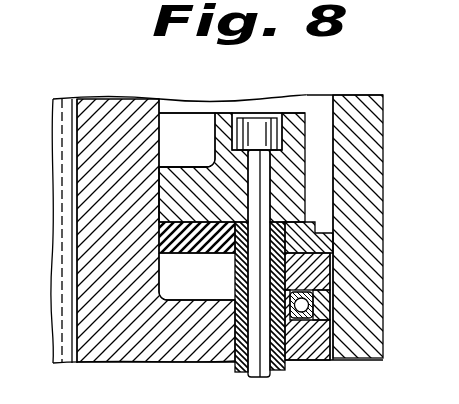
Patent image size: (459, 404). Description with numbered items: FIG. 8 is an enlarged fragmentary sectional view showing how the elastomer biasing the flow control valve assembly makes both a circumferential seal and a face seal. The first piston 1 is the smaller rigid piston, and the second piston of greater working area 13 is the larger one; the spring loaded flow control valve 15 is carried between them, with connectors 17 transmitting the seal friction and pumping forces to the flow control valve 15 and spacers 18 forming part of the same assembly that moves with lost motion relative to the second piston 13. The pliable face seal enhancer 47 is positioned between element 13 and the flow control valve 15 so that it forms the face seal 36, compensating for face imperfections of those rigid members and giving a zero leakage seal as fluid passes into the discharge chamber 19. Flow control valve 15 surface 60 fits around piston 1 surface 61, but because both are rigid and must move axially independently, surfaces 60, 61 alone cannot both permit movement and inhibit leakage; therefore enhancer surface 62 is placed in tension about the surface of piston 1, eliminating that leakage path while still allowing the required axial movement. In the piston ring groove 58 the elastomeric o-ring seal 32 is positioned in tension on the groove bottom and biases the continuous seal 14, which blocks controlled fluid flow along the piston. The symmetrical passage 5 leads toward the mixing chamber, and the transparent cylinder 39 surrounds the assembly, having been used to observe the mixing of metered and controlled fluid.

The first piston 1 is at (109, 85).
The symmetrical passage 5 is at (62, 350).
The second piston of greater working area 13 is at (330, 280).
The continuous seal 14 is at (330, 310).
The spring loaded flow control valve 15 is at (293, 133).
The connectors 17 is at (258, 130).
The spacers 18 is at (240, 283).
The discharge chamber 19 is at (183, 108).
The elastomeric o-ring seal 32 is at (328, 357).
The face seal 36 is at (312, 246).
The transparent cylinder 39 is at (383, 353).
The pliable face seal enhancer 47 is at (315, 226).
The piston ring groove 58 is at (305, 358).
The flow control valve surface 60 is at (170, 186).
The piston surface 61 is at (159, 142).
The enhancer surface 62 is at (197, 253).